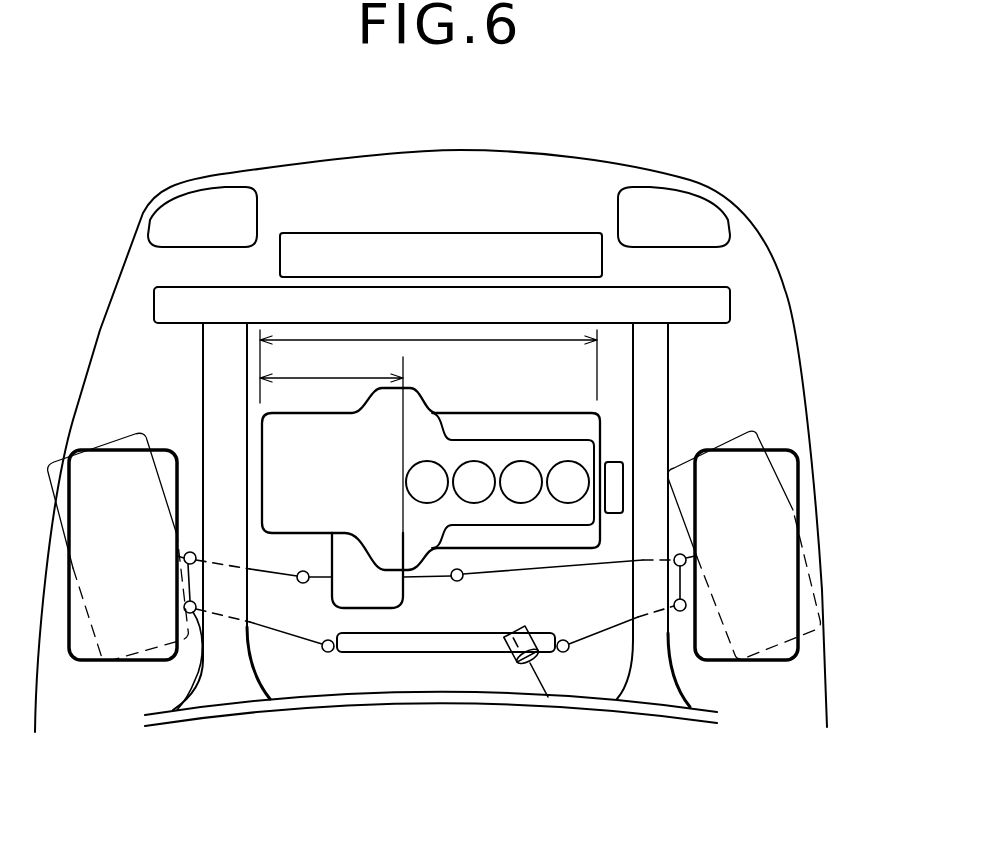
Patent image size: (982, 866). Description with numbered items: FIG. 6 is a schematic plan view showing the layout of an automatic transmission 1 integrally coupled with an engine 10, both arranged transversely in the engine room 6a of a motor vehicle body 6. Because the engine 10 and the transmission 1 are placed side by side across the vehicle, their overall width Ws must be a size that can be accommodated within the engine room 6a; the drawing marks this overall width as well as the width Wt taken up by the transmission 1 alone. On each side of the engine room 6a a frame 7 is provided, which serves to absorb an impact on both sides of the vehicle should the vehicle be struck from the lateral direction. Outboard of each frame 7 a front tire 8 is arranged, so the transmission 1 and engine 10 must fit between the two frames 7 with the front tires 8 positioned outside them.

The transmission 1 is at (343, 488).
The engine 10 is at (519, 413).
The vehicle body 6 is at (813, 437).
The engine room 6a is at (737, 385).
The frame 7 is at (218, 369).
The front tire 8 is at (97, 662).